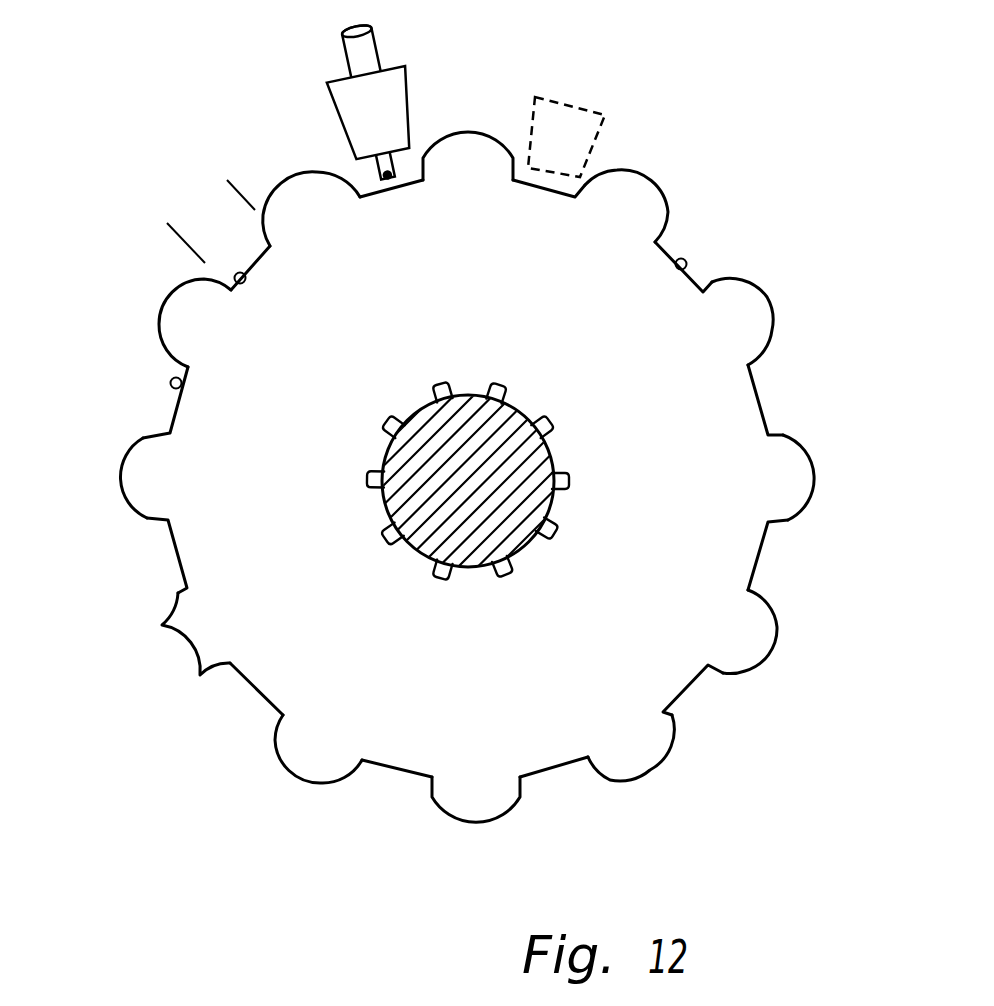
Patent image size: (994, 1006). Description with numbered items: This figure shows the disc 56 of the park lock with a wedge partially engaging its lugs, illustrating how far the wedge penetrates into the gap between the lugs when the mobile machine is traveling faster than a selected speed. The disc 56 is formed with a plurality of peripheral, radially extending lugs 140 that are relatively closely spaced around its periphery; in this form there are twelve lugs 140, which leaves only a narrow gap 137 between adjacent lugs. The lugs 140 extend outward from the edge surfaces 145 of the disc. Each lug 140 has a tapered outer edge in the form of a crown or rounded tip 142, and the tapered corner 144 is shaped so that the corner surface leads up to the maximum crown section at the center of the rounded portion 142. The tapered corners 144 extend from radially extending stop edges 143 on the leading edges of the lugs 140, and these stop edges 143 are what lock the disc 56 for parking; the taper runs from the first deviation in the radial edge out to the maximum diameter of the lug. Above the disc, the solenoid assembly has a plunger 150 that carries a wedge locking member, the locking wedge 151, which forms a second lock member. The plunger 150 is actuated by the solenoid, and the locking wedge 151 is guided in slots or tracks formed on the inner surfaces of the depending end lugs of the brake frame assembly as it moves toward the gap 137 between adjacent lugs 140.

The disc 56 is at (457, 452).
The narrow gap 137 is at (256, 170).
The lug 140 is at (312, 187).
The rounded tip 142 is at (657, 188).
The stop edge 143 is at (567, 190).
The tapered corner 144 is at (412, 150).
The edge surface 145 is at (190, 372).
The plunger 150 is at (338, 58).
The locking wedge 151 is at (340, 103).